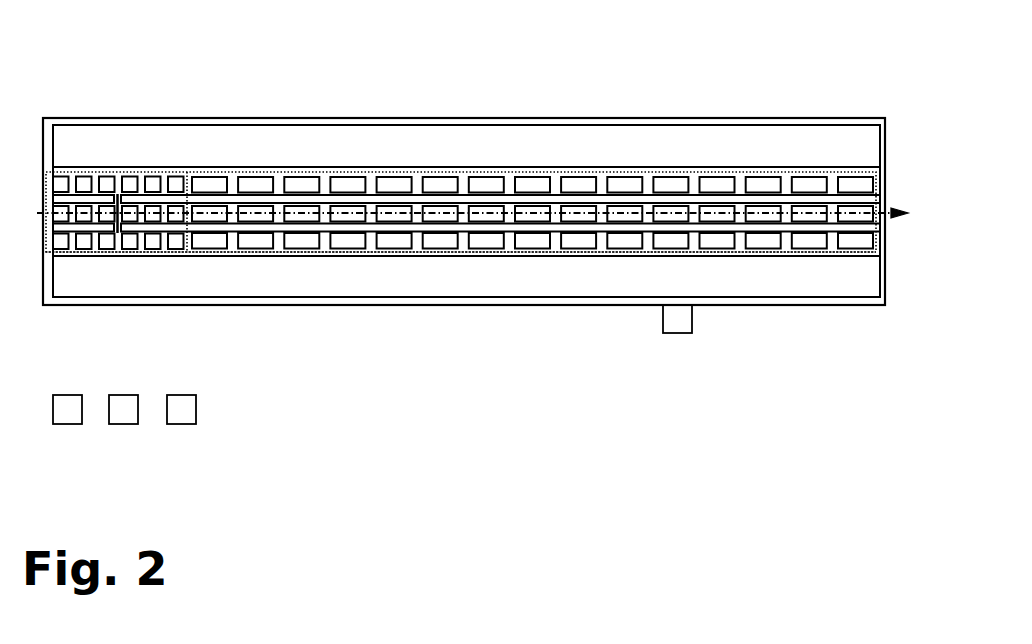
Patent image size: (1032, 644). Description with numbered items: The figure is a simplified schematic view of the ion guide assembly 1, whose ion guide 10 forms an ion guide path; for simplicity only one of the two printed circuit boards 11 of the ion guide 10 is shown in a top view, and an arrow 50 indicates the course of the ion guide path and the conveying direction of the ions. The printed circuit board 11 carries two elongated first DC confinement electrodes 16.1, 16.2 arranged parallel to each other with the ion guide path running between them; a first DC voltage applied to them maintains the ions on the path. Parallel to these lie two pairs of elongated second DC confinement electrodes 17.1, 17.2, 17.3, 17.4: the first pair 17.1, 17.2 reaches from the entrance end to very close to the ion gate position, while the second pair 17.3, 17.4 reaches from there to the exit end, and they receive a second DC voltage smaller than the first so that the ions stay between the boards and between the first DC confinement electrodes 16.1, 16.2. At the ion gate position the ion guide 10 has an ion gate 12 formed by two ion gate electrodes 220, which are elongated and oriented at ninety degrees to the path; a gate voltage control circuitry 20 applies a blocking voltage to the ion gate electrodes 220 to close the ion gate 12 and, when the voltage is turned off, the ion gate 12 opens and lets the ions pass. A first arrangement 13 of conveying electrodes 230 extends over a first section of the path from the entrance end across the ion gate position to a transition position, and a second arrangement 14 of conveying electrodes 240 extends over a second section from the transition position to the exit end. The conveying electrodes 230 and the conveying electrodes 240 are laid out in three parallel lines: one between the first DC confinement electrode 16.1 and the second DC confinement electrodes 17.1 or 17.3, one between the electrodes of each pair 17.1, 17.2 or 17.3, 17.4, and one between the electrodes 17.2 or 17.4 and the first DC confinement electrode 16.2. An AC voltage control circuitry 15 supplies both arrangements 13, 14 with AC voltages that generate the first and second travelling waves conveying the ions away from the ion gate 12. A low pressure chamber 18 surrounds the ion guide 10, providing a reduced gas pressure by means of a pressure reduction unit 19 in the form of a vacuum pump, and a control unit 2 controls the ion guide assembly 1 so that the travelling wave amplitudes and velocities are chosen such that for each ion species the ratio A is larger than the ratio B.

The ion guide assembly 1 is at (485, 243).
The control unit 2 is at (67, 413).
The ion guide 10 is at (320, 118).
The printed circuit board 11 is at (760, 124).
The ion gate 12 is at (120, 253).
The first arrangement of conveying electrodes 13 is at (77, 171).
The second arrangement of conveying electrodes 14 is at (322, 252).
The AC voltage control circuitry 15 is at (129, 413).
The first DC confinement electrode 16.1 is at (587, 285).
The first DC confinement electrode 16.2 is at (438, 143).
The second DC confinement electrode 17.1 is at (95, 229).
The second DC confinement electrode 17.2 is at (84, 197).
The second DC confinement electrode 17.3 is at (505, 228).
The second DC confinement electrode 17.4 is at (620, 197).
The low pressure chamber 18 is at (490, 306).
The pressure reduction unit 19 is at (680, 334).
The gate voltage control circuitry 20 is at (187, 413).
The arrow 50 is at (887, 217).
The ion gate electrode 220 is at (118, 210).
The conveying electrode 230 is at (177, 243).
The conveying electrode 240 is at (352, 180).